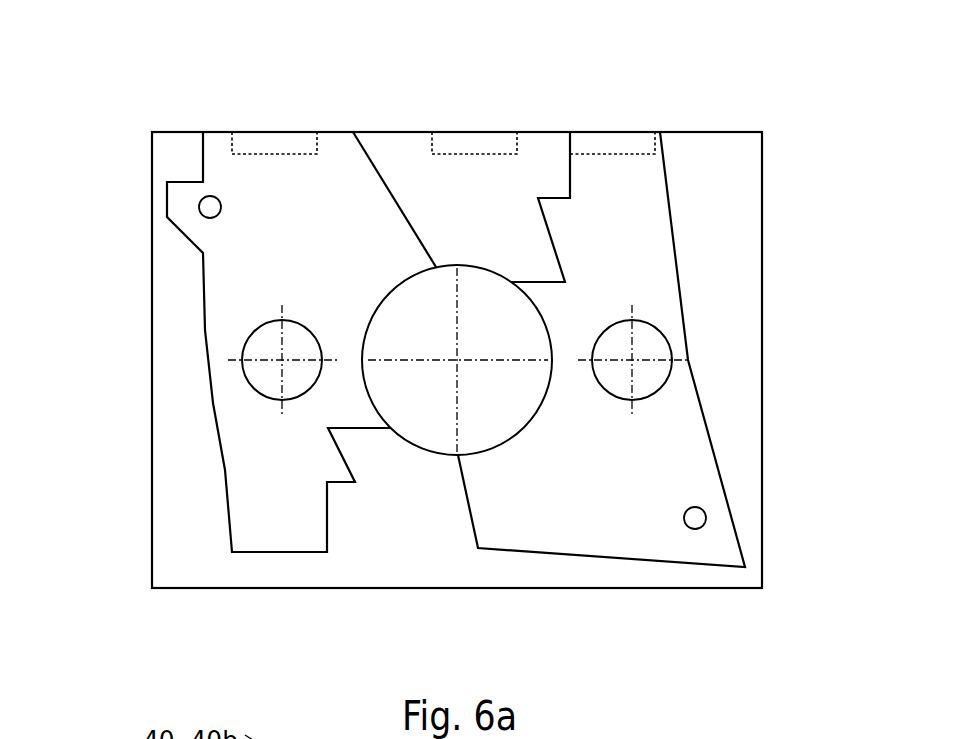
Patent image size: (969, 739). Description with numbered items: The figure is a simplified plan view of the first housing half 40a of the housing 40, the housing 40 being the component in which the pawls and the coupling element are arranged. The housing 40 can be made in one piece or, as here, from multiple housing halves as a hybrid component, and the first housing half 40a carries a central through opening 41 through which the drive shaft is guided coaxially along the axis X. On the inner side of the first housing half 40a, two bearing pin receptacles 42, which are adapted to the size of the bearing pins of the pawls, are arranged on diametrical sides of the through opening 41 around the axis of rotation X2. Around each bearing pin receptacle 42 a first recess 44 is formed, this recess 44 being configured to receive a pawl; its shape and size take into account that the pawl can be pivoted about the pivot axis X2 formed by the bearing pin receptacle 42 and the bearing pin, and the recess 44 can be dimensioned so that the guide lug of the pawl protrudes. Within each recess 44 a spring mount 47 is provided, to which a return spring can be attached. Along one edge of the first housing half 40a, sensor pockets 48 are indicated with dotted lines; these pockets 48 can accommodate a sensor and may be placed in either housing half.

The housing 40 is at (407, 305).
The first housing half 40a is at (457, 360).
The through opening 41 is at (430, 320).
The bearing pin receptacle 42 is at (262, 338).
The first recess 44 is at (218, 262).
The spring mount 47 is at (210, 207).
The sensor pocket 48 is at (267, 145).
The axis of rotation X is at (457, 362).
The pivot axis X2 is at (275, 355).